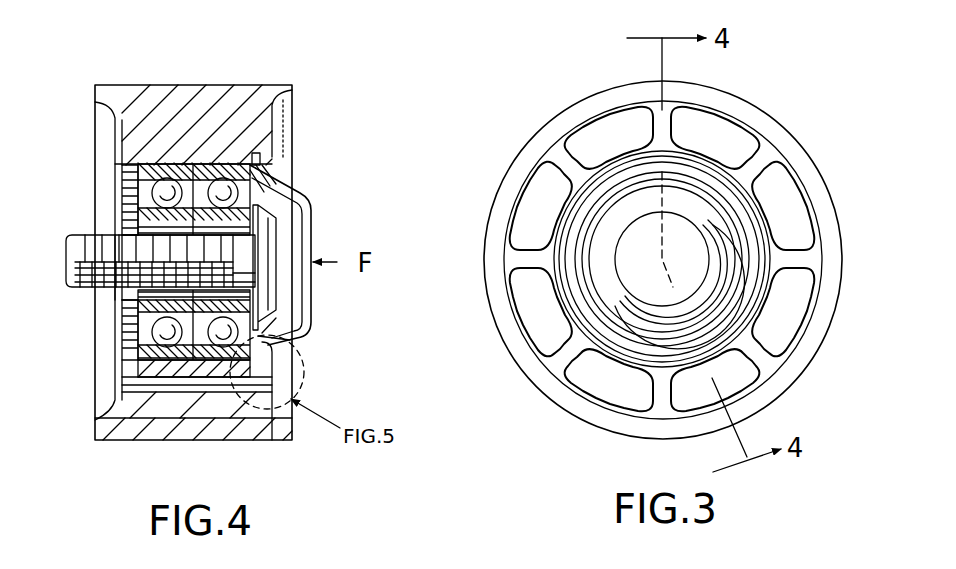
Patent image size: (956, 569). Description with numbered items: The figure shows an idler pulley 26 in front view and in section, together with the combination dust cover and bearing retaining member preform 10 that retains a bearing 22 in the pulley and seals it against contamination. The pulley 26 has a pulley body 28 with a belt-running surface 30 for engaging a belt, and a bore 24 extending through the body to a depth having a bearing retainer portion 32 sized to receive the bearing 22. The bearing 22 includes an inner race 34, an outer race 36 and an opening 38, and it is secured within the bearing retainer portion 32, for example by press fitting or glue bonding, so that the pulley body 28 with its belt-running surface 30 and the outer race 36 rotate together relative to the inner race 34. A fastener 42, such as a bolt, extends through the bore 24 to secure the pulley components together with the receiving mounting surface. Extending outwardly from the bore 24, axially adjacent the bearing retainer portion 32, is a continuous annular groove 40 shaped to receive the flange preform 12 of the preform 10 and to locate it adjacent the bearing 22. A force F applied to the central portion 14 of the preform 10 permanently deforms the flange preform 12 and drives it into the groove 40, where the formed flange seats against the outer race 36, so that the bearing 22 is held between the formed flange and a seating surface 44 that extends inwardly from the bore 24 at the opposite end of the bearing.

In FIG. 4, the combination dust cover and bearing retaining member preform 10 is at (297, 197).
In FIG. 3, the combination dust cover and bearing retaining member preform 10 is at (735, 228).
In FIG. 4, the flange preform 12 is at (273, 337).
In FIG. 4, the central portion 14 is at (310, 293).
In FIG. 3, the central portion 14 is at (637, 273).
In FIG. 4, the bearing 22 is at (215, 167).
In FIG. 4, the bore 24 is at (163, 295).
In FIG. 4, the idler pulley 26 is at (150, 398).
In FIG. 3, the idler pulley 26 is at (820, 320).
In FIG. 4, the pulley body 28 is at (190, 97).
In FIG. 3, the pulley body 28 is at (778, 135).
In FIG. 4, the belt-running surface 30 is at (146, 83).
In FIG. 3, the belt-running surface 30 is at (530, 382).
In FIG. 4, the bearing retainer portion 32 is at (212, 372).
In FIG. 4, the inner race 34 is at (118, 217).
In FIG. 4, the outer race 36 is at (167, 165).
In FIG. 4, the opening 38 is at (264, 184).
In FIG. 4, the annular groove 40 is at (257, 157).
In FIG. 4, the fastener 42 is at (270, 250).
In FIG. 4, the seating surface 44 is at (138, 170).